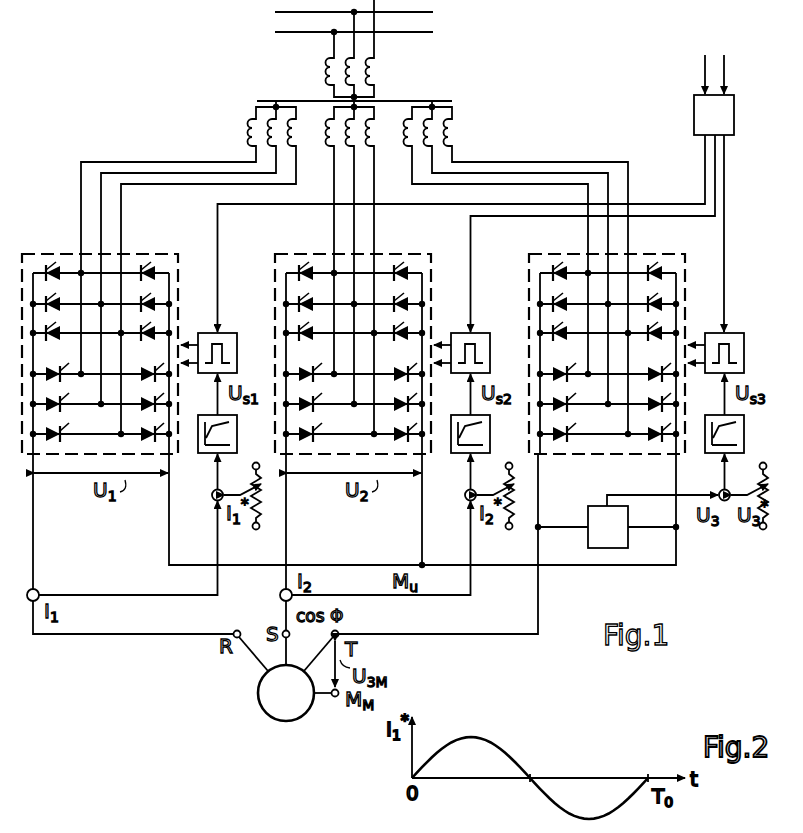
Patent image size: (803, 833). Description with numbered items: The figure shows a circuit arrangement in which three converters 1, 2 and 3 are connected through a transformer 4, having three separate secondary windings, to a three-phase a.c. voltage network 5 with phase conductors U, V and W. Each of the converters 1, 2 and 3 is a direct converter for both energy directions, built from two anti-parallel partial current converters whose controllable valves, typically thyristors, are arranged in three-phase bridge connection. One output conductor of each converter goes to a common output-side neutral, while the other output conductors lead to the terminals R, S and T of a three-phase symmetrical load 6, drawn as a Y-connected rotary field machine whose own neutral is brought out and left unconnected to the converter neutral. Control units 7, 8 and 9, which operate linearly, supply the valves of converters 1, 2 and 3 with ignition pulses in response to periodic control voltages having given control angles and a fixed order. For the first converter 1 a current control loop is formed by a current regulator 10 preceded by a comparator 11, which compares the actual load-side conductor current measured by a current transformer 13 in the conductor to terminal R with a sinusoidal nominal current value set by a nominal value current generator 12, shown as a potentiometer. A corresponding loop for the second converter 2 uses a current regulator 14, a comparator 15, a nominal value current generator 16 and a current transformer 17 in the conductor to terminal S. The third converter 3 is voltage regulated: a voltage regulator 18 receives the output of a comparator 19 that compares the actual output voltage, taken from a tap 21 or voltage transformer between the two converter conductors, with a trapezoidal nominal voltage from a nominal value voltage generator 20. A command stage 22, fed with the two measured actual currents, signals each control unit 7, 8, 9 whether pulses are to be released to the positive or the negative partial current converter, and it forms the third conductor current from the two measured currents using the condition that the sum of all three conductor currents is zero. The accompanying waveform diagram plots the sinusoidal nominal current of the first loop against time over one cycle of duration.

The first converter 1 is at (163, 258).
The second converter 2 is at (417, 258).
The third converter 3 is at (671, 258).
The transformer 4 is at (330, 97).
The three-phase a.c. voltage network 5 is at (300, 4).
The three-phase symmetrical load 6 is at (258, 694).
The control unit 7 is at (222, 332).
The control unit 8 is at (475, 332).
The control unit 9 is at (729, 332).
The current regulator 10 is at (205, 414).
The comparator 11 is at (211, 495).
The nominal value current generator 12 is at (252, 488).
The current transformer 13 is at (38, 592).
The current regulator 14 is at (460, 414).
The comparator 15 is at (464, 495).
The nominal value current generator 16 is at (505, 488).
The current transformer 17 is at (279, 594).
The voltage regulator 18 is at (714, 414).
The comparator 19 is at (720, 491).
The nominal value voltage generator 20 is at (763, 488).
The tap 21 is at (596, 505).
The command stage 22 is at (704, 114).